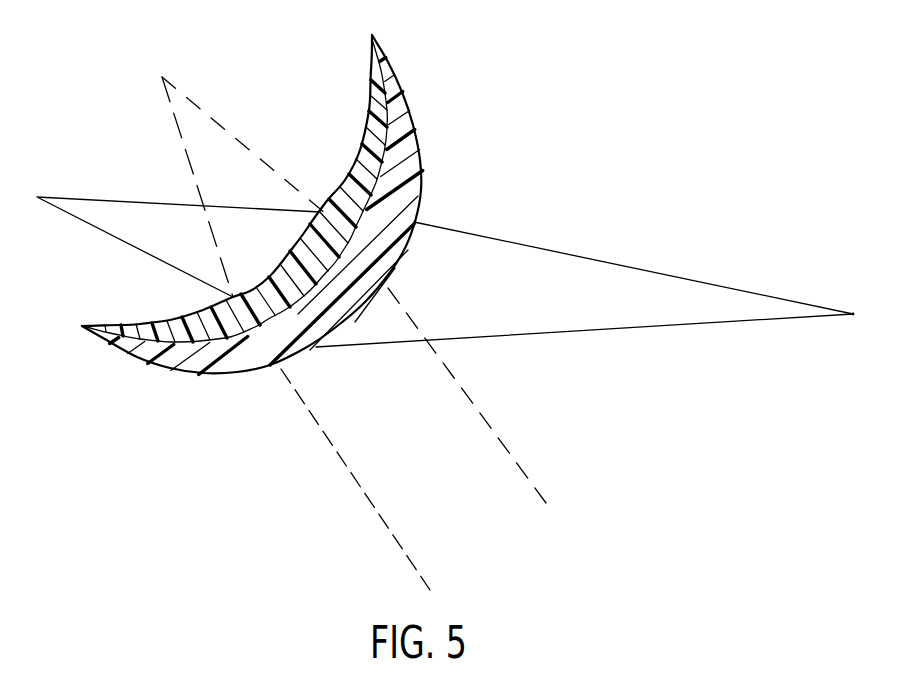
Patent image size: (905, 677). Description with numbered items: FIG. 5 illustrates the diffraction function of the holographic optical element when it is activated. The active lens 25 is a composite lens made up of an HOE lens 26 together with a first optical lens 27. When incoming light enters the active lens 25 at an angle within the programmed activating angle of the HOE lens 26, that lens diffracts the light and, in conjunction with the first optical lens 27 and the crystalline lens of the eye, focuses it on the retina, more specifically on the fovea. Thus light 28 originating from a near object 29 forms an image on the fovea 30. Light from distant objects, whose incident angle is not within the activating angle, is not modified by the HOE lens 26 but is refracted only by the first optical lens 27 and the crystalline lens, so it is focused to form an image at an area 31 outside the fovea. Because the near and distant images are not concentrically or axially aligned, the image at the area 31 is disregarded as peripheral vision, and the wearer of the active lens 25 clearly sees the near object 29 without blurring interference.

The active lens 25 is at (293, 201).
The HOE lens 26 is at (423, 142).
The first optical lens 27 is at (369, 117).
The light 28 is at (564, 252).
The near object 29 is at (595, 310).
The fovea 30 is at (168, 228).
The area outside the fovea 31 is at (343, 315).